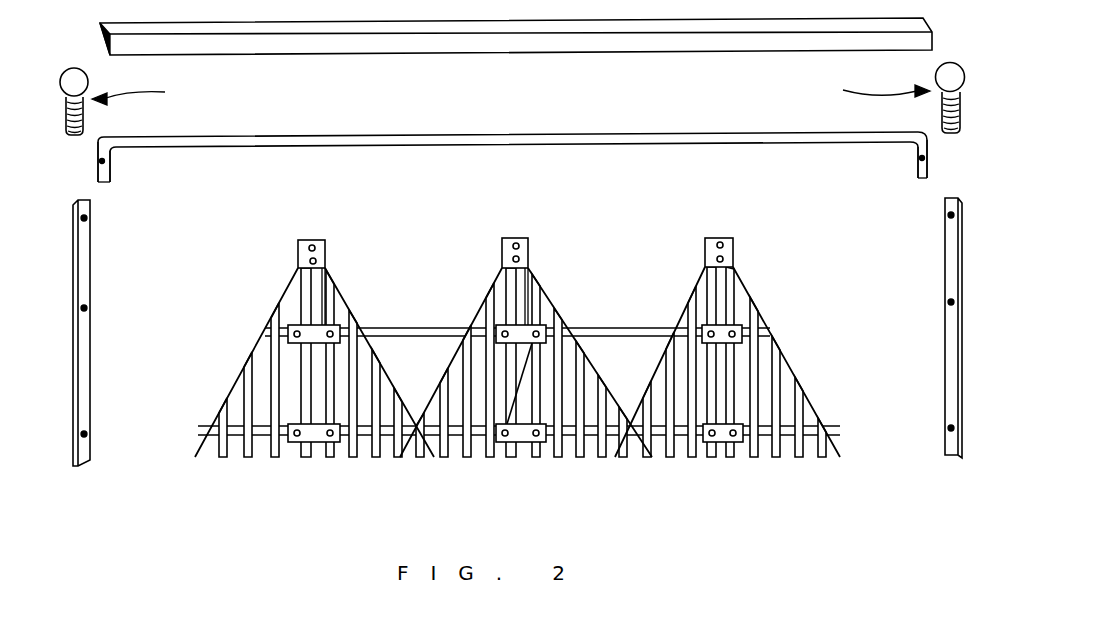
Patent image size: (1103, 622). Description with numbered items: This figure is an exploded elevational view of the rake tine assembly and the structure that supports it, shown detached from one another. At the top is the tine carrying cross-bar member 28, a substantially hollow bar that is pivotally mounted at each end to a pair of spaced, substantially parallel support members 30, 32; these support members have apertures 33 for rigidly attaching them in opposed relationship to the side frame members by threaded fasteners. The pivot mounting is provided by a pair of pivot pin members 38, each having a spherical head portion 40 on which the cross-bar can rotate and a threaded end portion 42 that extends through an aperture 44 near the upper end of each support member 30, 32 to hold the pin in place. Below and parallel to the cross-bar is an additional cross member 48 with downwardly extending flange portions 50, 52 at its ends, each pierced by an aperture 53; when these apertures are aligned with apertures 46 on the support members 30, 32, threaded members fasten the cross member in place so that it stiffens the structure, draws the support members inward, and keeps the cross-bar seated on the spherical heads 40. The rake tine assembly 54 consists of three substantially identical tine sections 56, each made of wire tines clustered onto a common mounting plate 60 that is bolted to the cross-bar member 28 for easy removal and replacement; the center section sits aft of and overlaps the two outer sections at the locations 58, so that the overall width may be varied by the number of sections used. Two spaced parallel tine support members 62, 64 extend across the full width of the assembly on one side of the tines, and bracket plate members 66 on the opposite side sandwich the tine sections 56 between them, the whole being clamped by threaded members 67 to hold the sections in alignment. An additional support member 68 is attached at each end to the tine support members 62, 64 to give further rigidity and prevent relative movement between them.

The tine carrying cross-bar member 28 is at (489, 41).
The support member 30 is at (950, 368).
The support member 32 is at (86, 364).
The apertures 33 is at (89, 434).
The pivot pin member 38 is at (511, 93).
The spherical head portion 40 is at (72, 78).
The threaded end portion 42 is at (82, 131).
The apertures 44 is at (89, 218).
The apertures 46 is at (89, 308).
The cross member 48 is at (653, 135).
The flange portion 50 is at (912, 178).
The flange portion 52 is at (110, 171).
The aperture 53 is at (99, 163).
The rake tine assembly 54 is at (378, 510).
The tine section 56 is at (234, 387).
The overlap 58 is at (418, 456).
The mounting plate 60 is at (327, 252).
The tine support member 62 is at (618, 330).
The tine support member 64 is at (268, 444).
The bracket plate member 66 is at (318, 330).
The threaded member 67 is at (740, 444).
The additional support member 68 is at (520, 383).